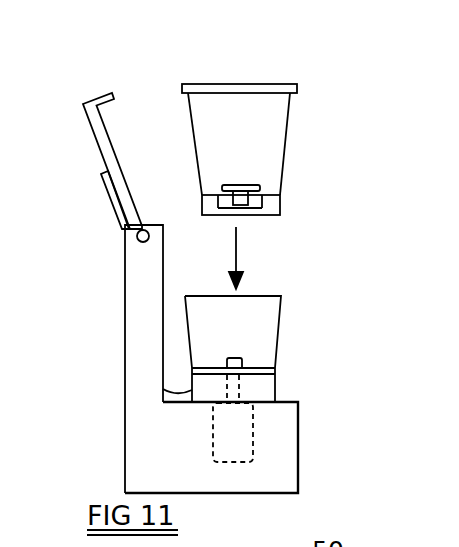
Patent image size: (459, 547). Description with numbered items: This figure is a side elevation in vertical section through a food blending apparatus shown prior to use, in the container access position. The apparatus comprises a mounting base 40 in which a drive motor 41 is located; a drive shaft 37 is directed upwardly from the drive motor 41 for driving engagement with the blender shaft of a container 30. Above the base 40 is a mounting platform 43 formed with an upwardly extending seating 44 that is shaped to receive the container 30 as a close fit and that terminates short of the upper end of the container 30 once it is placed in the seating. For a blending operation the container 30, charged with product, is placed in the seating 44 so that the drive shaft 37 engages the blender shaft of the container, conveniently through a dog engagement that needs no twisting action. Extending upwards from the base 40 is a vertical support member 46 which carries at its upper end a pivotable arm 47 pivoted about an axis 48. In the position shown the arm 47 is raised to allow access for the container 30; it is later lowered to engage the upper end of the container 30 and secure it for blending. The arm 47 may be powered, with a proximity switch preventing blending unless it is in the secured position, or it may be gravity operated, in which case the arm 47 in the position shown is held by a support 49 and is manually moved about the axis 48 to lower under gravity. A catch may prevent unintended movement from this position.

The container 30 is at (293, 130).
The drive shaft 37 is at (239, 385).
The mounting base 40 is at (288, 458).
The drive motor 41 is at (250, 428).
The mounting platform 43 is at (163, 388).
The seating 44 is at (283, 315).
The vertical support member 46 is at (132, 303).
The pivotable arm 47 is at (109, 124).
The axis 48 is at (137, 238).
The support 49 is at (102, 190).